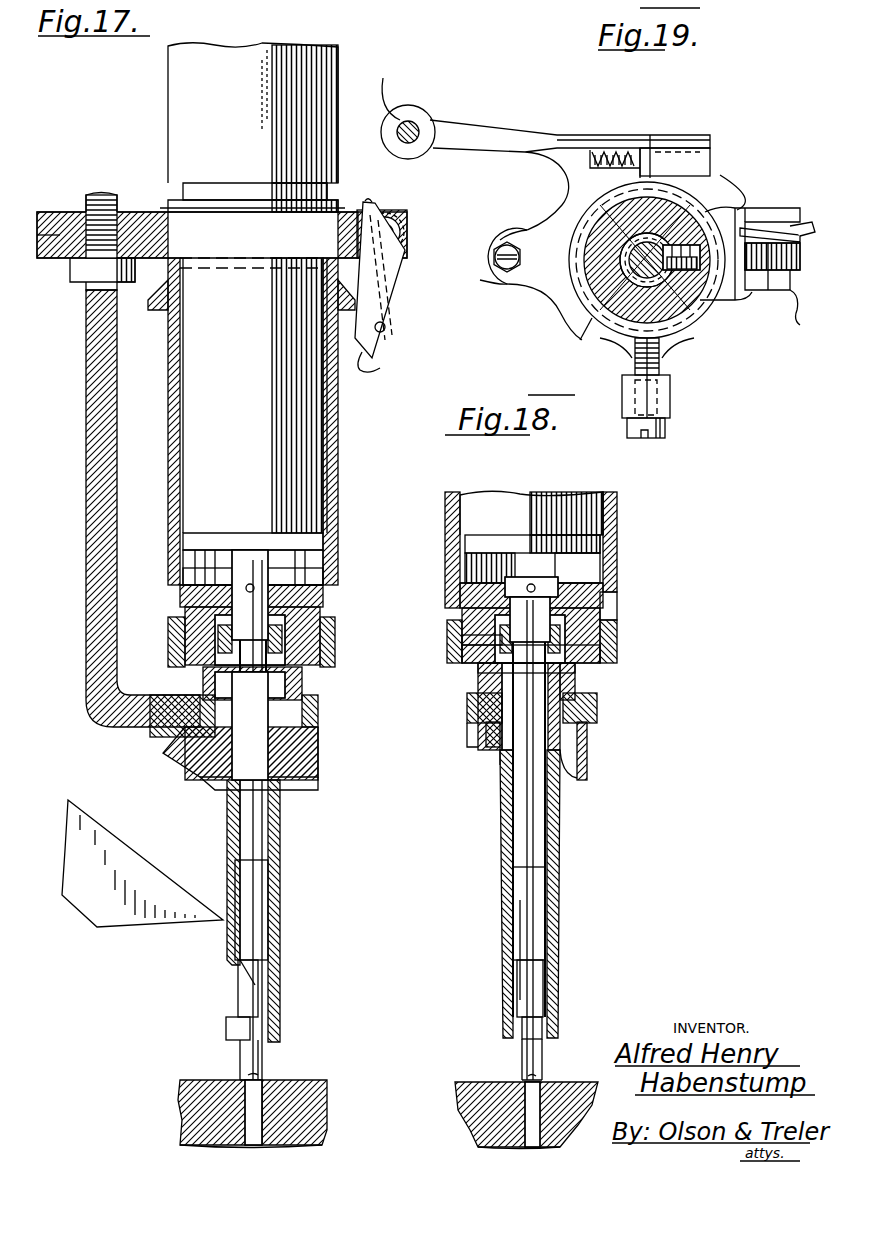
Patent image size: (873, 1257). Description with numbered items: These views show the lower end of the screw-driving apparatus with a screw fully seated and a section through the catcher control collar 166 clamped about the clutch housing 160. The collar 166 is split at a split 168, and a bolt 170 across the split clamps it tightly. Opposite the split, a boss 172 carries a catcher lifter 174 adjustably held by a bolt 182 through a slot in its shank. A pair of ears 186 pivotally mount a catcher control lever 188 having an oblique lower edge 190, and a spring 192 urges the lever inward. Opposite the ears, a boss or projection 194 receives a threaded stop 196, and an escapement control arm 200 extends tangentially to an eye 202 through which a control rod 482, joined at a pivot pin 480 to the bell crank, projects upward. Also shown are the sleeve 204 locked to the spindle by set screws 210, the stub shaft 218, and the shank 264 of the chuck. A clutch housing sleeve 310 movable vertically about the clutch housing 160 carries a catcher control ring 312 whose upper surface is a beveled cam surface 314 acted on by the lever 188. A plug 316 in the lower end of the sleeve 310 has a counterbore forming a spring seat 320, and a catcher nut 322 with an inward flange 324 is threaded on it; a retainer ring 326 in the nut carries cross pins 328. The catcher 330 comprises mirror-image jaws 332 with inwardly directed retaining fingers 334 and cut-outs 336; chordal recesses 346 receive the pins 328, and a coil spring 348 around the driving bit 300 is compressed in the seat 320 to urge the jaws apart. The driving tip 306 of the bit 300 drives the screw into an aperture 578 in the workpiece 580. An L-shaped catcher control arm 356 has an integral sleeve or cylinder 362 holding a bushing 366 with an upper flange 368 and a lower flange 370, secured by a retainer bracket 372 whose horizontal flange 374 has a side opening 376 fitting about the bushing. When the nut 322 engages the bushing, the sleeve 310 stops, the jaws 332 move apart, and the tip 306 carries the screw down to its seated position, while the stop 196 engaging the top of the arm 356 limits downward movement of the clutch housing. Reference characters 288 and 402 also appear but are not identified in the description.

In FIG. 17, the clutch housing 160 is at (183, 95).
In FIG. 19, the clutch housing 160 is at (660, 205).
In FIG. 18, the clutch housing 160 is at (540, 510).
In FIG. 17, the catcher control collar 166 is at (166, 207).
In FIG. 19, the catcher control collar 166 is at (705, 320).
In FIG. 19, the split 168 is at (644, 135).
In FIG. 19, the bolt 170 is at (712, 148).
In FIG. 19, the boss 172 is at (633, 350).
In FIG. 19, the catcher lifter 174 is at (668, 392).
In FIG. 19, the bolt 182 is at (668, 432).
In FIG. 19, the ears 186 is at (760, 210).
In FIG. 17, the catcher control lever 188 is at (355, 342).
In FIG. 19, the catcher control lever 188 is at (805, 290).
In FIG. 17, the oblique lower edge 190 is at (365, 368).
In FIG. 17, the spring 192 is at (372, 207).
In FIG. 19, the spring 192 is at (800, 208).
In FIG. 19, the boss or projection 194 is at (508, 284).
In FIG. 17, the stop 196 is at (98, 205).
In FIG. 19, the stop 196 is at (508, 240).
In FIG. 19, the escapement control arm 200 is at (463, 130).
In FIG. 19, the eye or sleeve 202 is at (415, 118).
In FIG. 19, the sleeve 204 is at (558, 192).
In FIG. 19, the set screws 210 is at (700, 250).
In FIG. 19, the spindle or stub shaft 218 is at (622, 262).
In FIG. 19, the shank 264 is at (592, 318).
In FIG. 19, the core 288 is at (628, 248).
In FIG. 17, the driving bit 300 is at (258, 822).
In FIG. 18, the driving bit 300 is at (520, 858).
In FIG. 17, the driving tip 306 is at (248, 1052).
In FIG. 18, the driving tip 306 is at (540, 1060).
In FIG. 17, the clutch housing sleeve 310 is at (338, 415).
In FIG. 18, the clutch housing sleeve 310 is at (618, 498).
In FIG. 17, the catcher control ring 312 is at (158, 312).
In FIG. 17, the beveled cam surface 314 is at (335, 295).
In FIG. 17, the plug 316 is at (192, 578).
In FIG. 17, the spring seat 320 is at (178, 600).
In FIG. 18, the spring seat 320 is at (618, 570).
In FIG. 17, the catcher nut 322 is at (337, 625).
In FIG. 18, the catcher nut 322 is at (618, 625).
In FIG. 18, the flange 324 is at (468, 720).
In FIG. 18, the retainer ring 326 is at (612, 650).
In FIG. 18, the cross pins 328 is at (590, 682).
In FIG. 17, the catcher 330 is at (283, 912).
In FIG. 18, the catcher 330 is at (568, 868).
In FIG. 17, the jaws 332 is at (275, 878).
In FIG. 18, the jaws 332 is at (512, 843).
In FIG. 17, the retaining fingers 334 is at (228, 1025).
In FIG. 18, the retaining fingers 334 is at (505, 1030).
In FIG. 17, the cut out 336 is at (250, 985).
In FIG. 18, the chordal recesses 346 is at (600, 618).
In FIG. 18, the coil spring 348 is at (575, 578).
In FIG. 17, the catcher control arm 356 is at (88, 460).
In FIG. 17, the sleeve or cylinder 362 is at (318, 710).
In FIG. 18, the sleeve or cylinder 362 is at (598, 716).
In FIG. 18, the bushing 366 is at (488, 745).
In FIG. 17, the circumferential flange 368 is at (203, 675).
In FIG. 18, the circumferential flange 368 is at (575, 692).
In FIG. 18, the circumferential flange 370 is at (475, 775).
In FIG. 17, the retainer bracket 372 is at (275, 794).
In FIG. 18, the retainer bracket 372 is at (590, 755).
In FIG. 18, the horizontal flange 374 is at (587, 765).
In FIG. 18, the side opening 376 is at (500, 762).
In FIG. 17, the wedge 402 is at (120, 917).
In FIG. 17, the pivot pin 480 is at (230, 1082).
In FIG. 18, the pivot pin 480 is at (527, 1083).
In FIG. 19, the control rod 482 is at (397, 83).
In FIG. 17, the aperture 578 is at (190, 1132).
In FIG. 18, the aperture 578 is at (468, 1140).
In FIG. 17, the workpiece 580 is at (190, 1100).
In FIG. 18, the workpiece 580 is at (570, 1090).